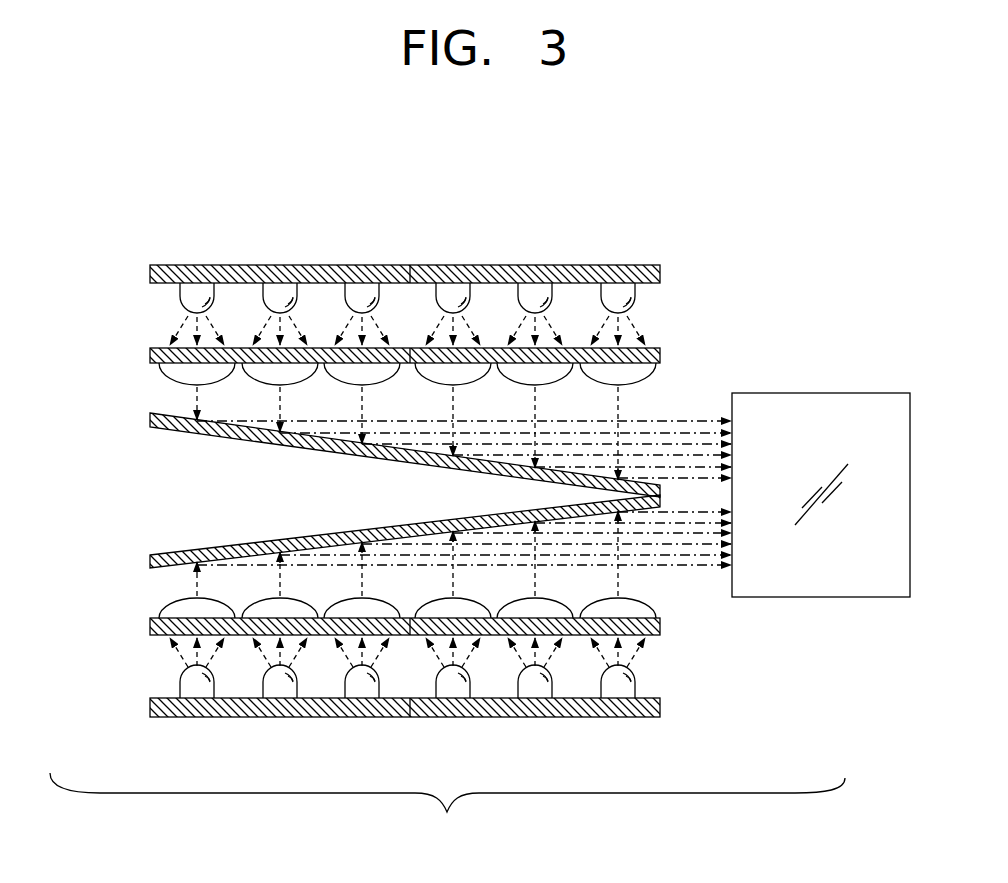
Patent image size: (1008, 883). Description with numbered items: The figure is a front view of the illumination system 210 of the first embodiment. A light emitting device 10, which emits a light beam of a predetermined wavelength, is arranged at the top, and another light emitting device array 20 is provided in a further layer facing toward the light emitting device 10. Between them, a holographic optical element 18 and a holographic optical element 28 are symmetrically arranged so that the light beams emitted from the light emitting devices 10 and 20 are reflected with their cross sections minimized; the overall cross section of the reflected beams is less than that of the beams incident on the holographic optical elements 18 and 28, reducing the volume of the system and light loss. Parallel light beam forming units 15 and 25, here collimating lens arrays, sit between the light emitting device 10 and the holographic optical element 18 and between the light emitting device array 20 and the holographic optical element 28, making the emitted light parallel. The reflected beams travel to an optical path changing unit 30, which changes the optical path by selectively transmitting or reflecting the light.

The light emitting device 10 is at (150, 272).
The parallel light beam forming unit 15 is at (150, 356).
The holographic optical element 18 is at (150, 418).
The holographic optical element 28 is at (150, 560).
The parallel light beam forming unit 25 is at (150, 628).
The light emitting device array 20 is at (150, 706).
The optical path changing unit 30 is at (823, 393).
The illumination system 210 is at (447, 814).